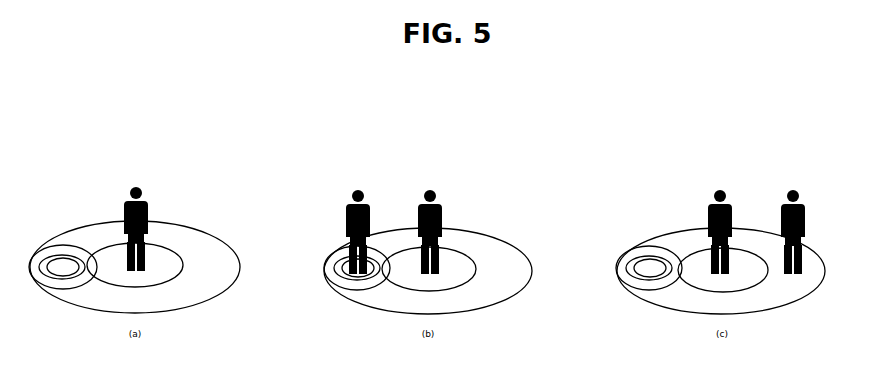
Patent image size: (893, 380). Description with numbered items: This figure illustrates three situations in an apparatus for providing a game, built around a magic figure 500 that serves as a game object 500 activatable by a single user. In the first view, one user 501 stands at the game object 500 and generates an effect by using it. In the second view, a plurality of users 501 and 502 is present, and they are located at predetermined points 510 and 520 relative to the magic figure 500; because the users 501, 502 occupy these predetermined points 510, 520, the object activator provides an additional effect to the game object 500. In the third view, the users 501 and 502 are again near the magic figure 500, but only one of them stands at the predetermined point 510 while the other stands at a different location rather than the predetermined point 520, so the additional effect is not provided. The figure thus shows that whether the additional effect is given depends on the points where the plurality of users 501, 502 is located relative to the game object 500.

The magic figure 500 is at (240, 264).
The user 501 is at (141, 188).
The user 502 is at (363, 191).
The predetermined point 510 is at (433, 276).
The predetermined point 520 is at (357, 276).